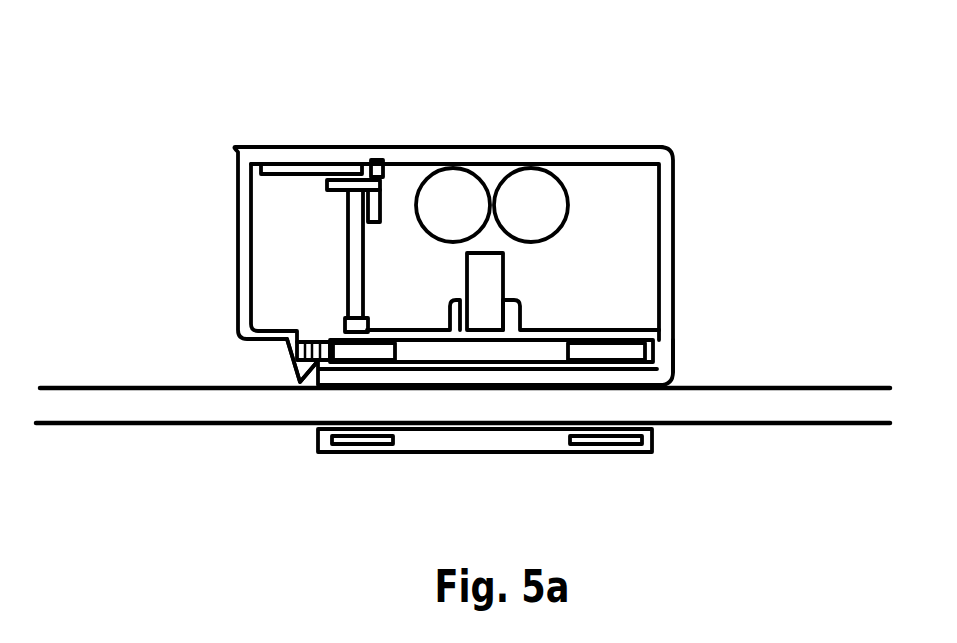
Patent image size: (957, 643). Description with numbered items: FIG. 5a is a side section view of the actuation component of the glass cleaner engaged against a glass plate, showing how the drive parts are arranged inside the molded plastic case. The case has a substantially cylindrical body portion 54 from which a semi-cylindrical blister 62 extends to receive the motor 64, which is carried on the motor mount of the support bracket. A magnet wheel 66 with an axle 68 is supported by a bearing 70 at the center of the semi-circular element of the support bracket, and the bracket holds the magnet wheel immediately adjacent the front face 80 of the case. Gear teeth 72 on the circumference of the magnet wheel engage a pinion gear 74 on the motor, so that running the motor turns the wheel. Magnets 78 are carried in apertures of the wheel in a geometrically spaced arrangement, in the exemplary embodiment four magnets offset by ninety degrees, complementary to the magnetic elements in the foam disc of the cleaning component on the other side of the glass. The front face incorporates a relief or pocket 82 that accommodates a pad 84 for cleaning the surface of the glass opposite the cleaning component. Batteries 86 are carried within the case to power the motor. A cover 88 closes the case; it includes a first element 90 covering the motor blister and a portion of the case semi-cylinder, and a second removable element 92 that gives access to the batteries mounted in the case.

The body portion 54 is at (672, 183).
The semi-cylindrical blister 62 is at (241, 243).
The motor 64 is at (317, 240).
The magnet wheel 66 is at (670, 347).
The axle 68 is at (503, 273).
The bearing 70 is at (520, 313).
The gear teeth 72 is at (309, 365).
The pinion gear 74 is at (297, 357).
The magnets 78 is at (605, 350).
The front face 80 is at (673, 368).
The relief or pocket 82 is at (627, 375).
The pad 84 is at (603, 375).
The batteries 86 is at (457, 183).
The cover 88 is at (415, 142).
The first element 90 is at (263, 146).
The second removable element 92 is at (611, 146).